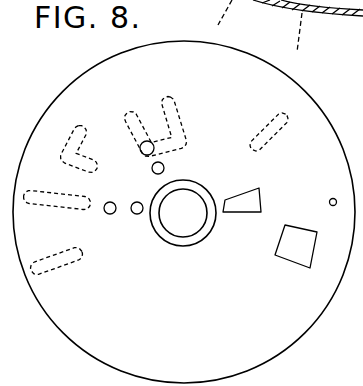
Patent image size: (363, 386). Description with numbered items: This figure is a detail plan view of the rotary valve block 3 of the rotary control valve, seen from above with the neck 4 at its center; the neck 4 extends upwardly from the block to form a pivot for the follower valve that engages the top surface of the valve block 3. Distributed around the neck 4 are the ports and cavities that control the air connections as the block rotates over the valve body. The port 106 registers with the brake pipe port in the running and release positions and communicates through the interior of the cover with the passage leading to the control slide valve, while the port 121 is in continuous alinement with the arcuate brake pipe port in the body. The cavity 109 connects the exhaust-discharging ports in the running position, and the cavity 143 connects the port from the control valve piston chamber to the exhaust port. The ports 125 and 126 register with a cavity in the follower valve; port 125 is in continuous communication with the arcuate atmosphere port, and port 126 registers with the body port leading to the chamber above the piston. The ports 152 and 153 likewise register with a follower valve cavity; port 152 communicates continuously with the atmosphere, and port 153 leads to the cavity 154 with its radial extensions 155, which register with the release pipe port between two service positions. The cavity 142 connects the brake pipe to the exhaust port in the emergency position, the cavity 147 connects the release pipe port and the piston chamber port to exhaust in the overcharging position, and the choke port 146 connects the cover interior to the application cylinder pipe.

The rotary valve block 3 is at (300, 330).
The neck 4 is at (191, 247).
The cavity 109 is at (78, 125).
The radial extensions 155 is at (167, 100).
The cavity 154 is at (184, 143).
The port 153 is at (142, 152).
The port 152 is at (165, 166).
The port 126 is at (110, 214).
The port 125 is at (137, 214).
The cavity 147 is at (62, 209).
The cavity 142 is at (69, 268).
The cavity 143 is at (284, 129).
The port 121 is at (260, 195).
The choke port 146 is at (332, 197).
The port 106 is at (315, 244).